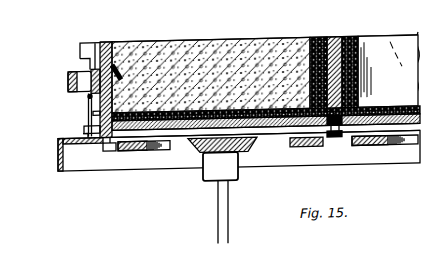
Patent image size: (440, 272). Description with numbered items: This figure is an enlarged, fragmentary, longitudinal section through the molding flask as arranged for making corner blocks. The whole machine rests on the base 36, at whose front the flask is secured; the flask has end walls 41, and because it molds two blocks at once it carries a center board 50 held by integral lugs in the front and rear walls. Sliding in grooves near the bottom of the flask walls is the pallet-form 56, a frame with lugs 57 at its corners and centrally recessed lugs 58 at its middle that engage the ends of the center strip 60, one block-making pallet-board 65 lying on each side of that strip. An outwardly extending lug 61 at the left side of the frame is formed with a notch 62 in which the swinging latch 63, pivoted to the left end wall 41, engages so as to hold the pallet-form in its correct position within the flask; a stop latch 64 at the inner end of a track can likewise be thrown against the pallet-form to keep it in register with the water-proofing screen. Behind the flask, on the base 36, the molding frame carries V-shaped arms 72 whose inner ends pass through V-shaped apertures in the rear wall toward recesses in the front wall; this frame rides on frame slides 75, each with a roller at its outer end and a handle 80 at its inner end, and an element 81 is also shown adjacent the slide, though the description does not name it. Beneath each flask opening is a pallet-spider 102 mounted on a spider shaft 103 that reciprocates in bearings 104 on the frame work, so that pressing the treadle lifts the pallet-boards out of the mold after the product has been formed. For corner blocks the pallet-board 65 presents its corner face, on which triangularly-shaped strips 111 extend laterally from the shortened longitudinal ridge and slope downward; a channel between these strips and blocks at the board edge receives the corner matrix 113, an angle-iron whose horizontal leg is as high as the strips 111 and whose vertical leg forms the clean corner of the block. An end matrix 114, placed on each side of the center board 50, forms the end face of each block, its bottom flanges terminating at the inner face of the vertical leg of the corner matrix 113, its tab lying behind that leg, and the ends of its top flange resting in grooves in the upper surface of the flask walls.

The base 36 is at (59, 156).
The end wall 41 is at (81, 40).
The center board 50 is at (333, 39).
The pallet-form 56 is at (108, 140).
The lug 57 is at (114, 135).
The lug 58 is at (318, 142).
The center strip 60 is at (339, 140).
The outwardly extending lug 61 is at (87, 130).
The notch 62 is at (84, 122).
The swinging latch 63 is at (98, 110).
The stop latch 64 is at (416, 122).
The block-making pallet-board 65 is at (273, 129).
The V-shaped arm 72 is at (118, 32).
The frame slide 75 is at (91, 69).
The handle 80 is at (68, 73).
The rod 81 is at (88, 94).
The pallet-spider 102 is at (160, 150).
The spider shaft 103 is at (218, 196).
The bearing 104 is at (413, 152).
The triangularly-shaped strip 111 is at (395, 114).
The corner matrix 113 is at (368, 111).
The end matrix 114 is at (318, 38).